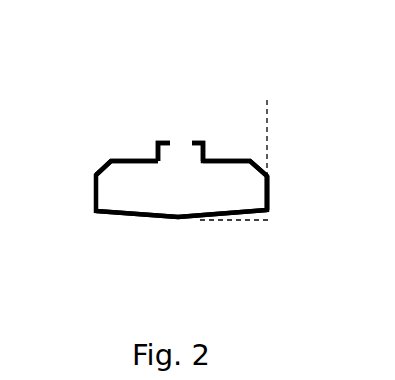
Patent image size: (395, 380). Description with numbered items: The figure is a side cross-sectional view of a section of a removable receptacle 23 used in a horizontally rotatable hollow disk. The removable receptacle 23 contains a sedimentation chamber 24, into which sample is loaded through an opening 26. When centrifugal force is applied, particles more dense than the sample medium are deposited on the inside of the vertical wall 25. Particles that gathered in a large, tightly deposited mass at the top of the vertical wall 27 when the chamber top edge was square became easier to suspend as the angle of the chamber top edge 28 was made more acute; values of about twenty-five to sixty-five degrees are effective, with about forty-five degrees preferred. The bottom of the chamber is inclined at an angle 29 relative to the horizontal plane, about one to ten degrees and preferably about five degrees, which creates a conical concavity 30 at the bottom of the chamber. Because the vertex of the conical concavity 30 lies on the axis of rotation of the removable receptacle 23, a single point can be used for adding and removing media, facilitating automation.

The removable receptacle 23 is at (112, 236).
The sedimentation chamber 24 is at (160, 164).
The vertical wall 25 is at (282, 190).
The opening 26 is at (182, 134).
The top of the vertical wall 27 is at (257, 190).
The angle of the chamber top edge 28 is at (255, 149).
The angle of the bottom of the sedimentation chamber 29 is at (276, 219).
The conical concavity 30 is at (172, 204).